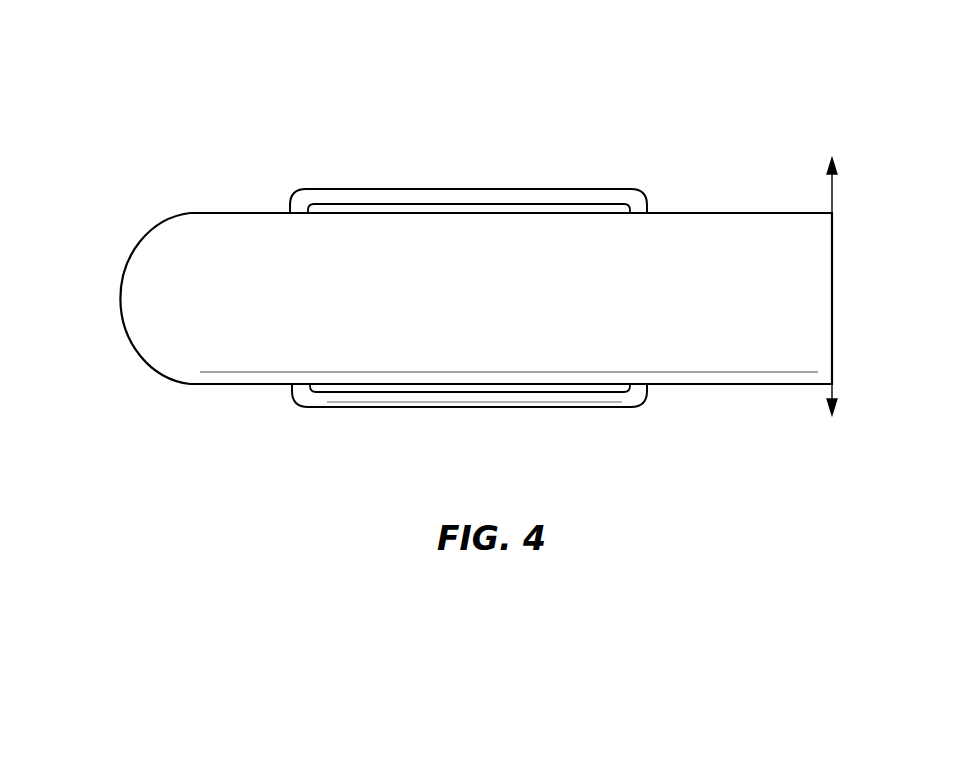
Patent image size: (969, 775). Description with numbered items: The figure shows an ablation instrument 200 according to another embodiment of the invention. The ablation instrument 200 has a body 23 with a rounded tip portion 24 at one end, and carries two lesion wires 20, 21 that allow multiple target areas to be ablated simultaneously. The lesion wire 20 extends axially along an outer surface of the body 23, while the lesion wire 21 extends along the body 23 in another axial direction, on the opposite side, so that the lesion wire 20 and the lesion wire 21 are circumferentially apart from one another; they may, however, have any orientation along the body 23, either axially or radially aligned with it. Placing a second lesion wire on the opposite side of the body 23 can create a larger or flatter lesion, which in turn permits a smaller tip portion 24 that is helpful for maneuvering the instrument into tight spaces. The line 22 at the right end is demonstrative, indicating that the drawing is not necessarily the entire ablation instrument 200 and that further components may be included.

The ablation instrument 200 is at (568, 92).
The lesion wire 20 is at (464, 197).
The lesion wire 21 is at (456, 397).
The line 22 is at (832, 190).
The body 23 is at (687, 386).
The tip portion 24 is at (113, 292).